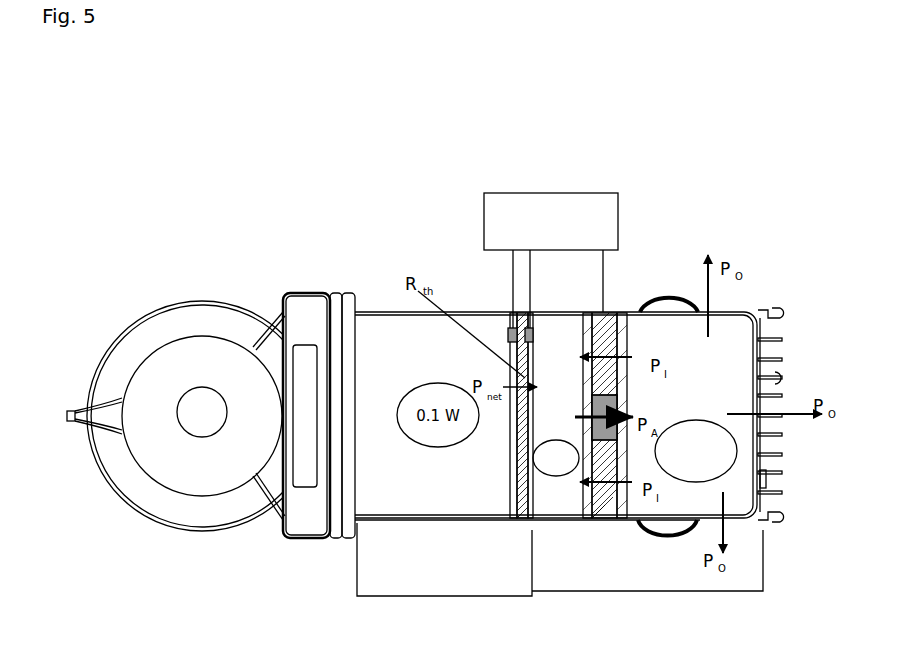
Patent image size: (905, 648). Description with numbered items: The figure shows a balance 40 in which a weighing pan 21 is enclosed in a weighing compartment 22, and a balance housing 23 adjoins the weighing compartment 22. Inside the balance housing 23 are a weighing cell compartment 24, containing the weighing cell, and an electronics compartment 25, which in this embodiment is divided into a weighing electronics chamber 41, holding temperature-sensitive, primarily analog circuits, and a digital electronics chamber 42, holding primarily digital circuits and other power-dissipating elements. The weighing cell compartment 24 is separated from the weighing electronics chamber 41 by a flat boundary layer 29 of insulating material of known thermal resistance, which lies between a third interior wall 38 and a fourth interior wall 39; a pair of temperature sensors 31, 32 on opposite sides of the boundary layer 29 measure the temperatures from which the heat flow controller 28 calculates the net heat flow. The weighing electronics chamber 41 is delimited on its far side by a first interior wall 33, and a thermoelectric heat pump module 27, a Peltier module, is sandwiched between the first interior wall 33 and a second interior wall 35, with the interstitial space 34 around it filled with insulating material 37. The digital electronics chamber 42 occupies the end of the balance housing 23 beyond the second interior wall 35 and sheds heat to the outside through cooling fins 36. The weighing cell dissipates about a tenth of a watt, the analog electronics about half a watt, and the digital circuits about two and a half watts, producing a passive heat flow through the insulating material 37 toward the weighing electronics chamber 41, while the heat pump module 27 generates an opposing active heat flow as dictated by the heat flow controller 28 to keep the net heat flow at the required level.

The weighing pan 21 is at (200, 410).
The weighing compartment 22 is at (127, 383).
The balance housing 23 is at (405, 306).
The weighing cell compartment 24 is at (444, 572).
The electronics compartment 25 is at (647, 575).
The thermoelectric heat pump module 27 is at (613, 397).
The heat flow controller 28 is at (517, 218).
The boundary layer 29 is at (518, 508).
The temperature sensor 31 is at (512, 325).
The temperature sensor 32 is at (532, 326).
The first interior wall 33 is at (600, 318).
The interstitial space 34 is at (602, 503).
The second interior wall 35 is at (654, 404).
The cooling fins 36 is at (777, 495).
The insulating material 37 is at (604, 429).
The third interior wall 38 is at (512, 503).
The fourth interior wall 39 is at (530, 497).
The balance 40 is at (333, 213).
The weighing electronics chamber 41 is at (553, 493).
The digital electronics chamber 42 is at (642, 503).